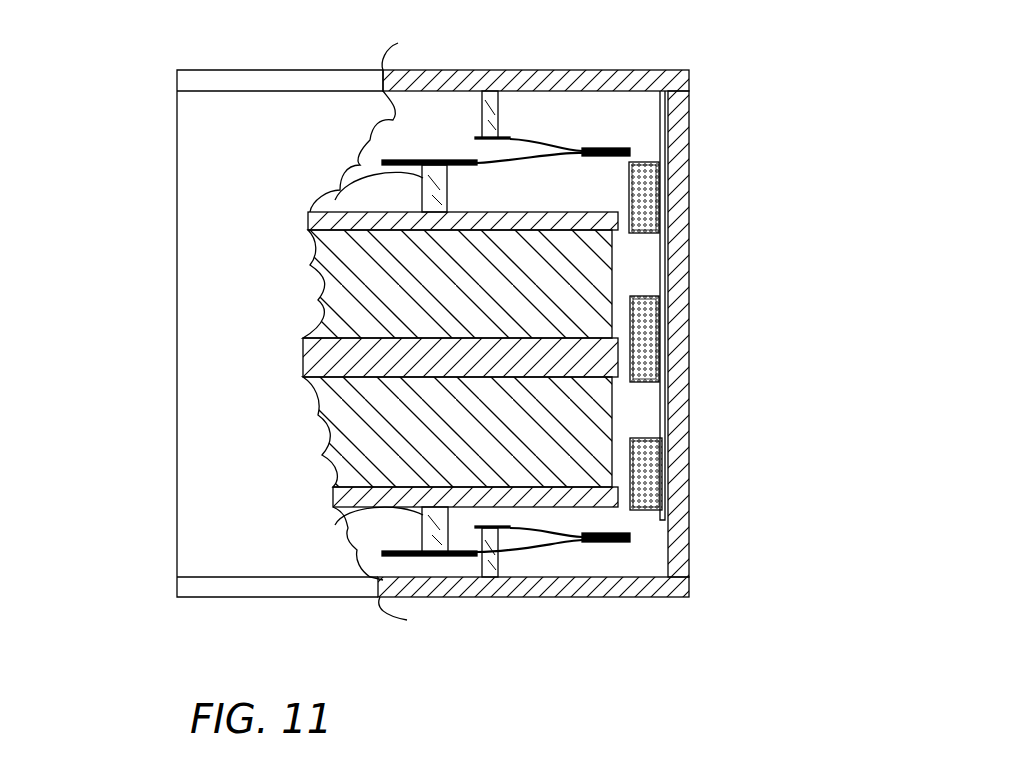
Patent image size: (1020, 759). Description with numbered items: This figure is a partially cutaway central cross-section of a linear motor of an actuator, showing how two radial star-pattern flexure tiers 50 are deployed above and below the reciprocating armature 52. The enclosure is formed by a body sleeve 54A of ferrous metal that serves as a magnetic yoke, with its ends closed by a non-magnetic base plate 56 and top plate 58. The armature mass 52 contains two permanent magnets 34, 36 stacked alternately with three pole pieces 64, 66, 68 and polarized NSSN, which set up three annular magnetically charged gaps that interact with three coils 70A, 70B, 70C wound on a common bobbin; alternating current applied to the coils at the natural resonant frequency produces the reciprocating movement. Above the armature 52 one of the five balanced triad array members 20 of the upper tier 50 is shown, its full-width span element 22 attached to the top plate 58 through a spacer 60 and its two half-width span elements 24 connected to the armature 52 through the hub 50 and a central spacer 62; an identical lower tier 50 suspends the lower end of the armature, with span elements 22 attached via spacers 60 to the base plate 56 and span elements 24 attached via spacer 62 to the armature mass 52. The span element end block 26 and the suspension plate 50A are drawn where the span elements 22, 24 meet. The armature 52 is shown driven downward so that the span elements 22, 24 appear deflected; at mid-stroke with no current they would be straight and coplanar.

The balanced triad array member 20 is at (565, 301).
The full-width span element 22 is at (535, 137).
The half-width span element 24 is at (550, 158).
The flexure end block 26 is at (603, 148).
The permanent magnet 34 is at (565, 302).
The permanent magnet 36 is at (613, 482).
The radial star-pattern flexure tier 50 is at (155, 118).
The suspension spring plate 50A is at (447, 162).
The reciprocating armature 52 is at (310, 503).
The body sleeve 54A is at (675, 465).
The base plate 56 is at (635, 590).
The top plate 58 is at (650, 78).
The spacer 60 is at (490, 118).
The central spacer 62 is at (345, 178).
The pole piece 64 is at (603, 222).
The pole piece 66 is at (607, 360).
The pole piece 68 is at (618, 503).
The coil 70A is at (660, 185).
The coil 70B is at (660, 330).
The coil 70C is at (658, 505).